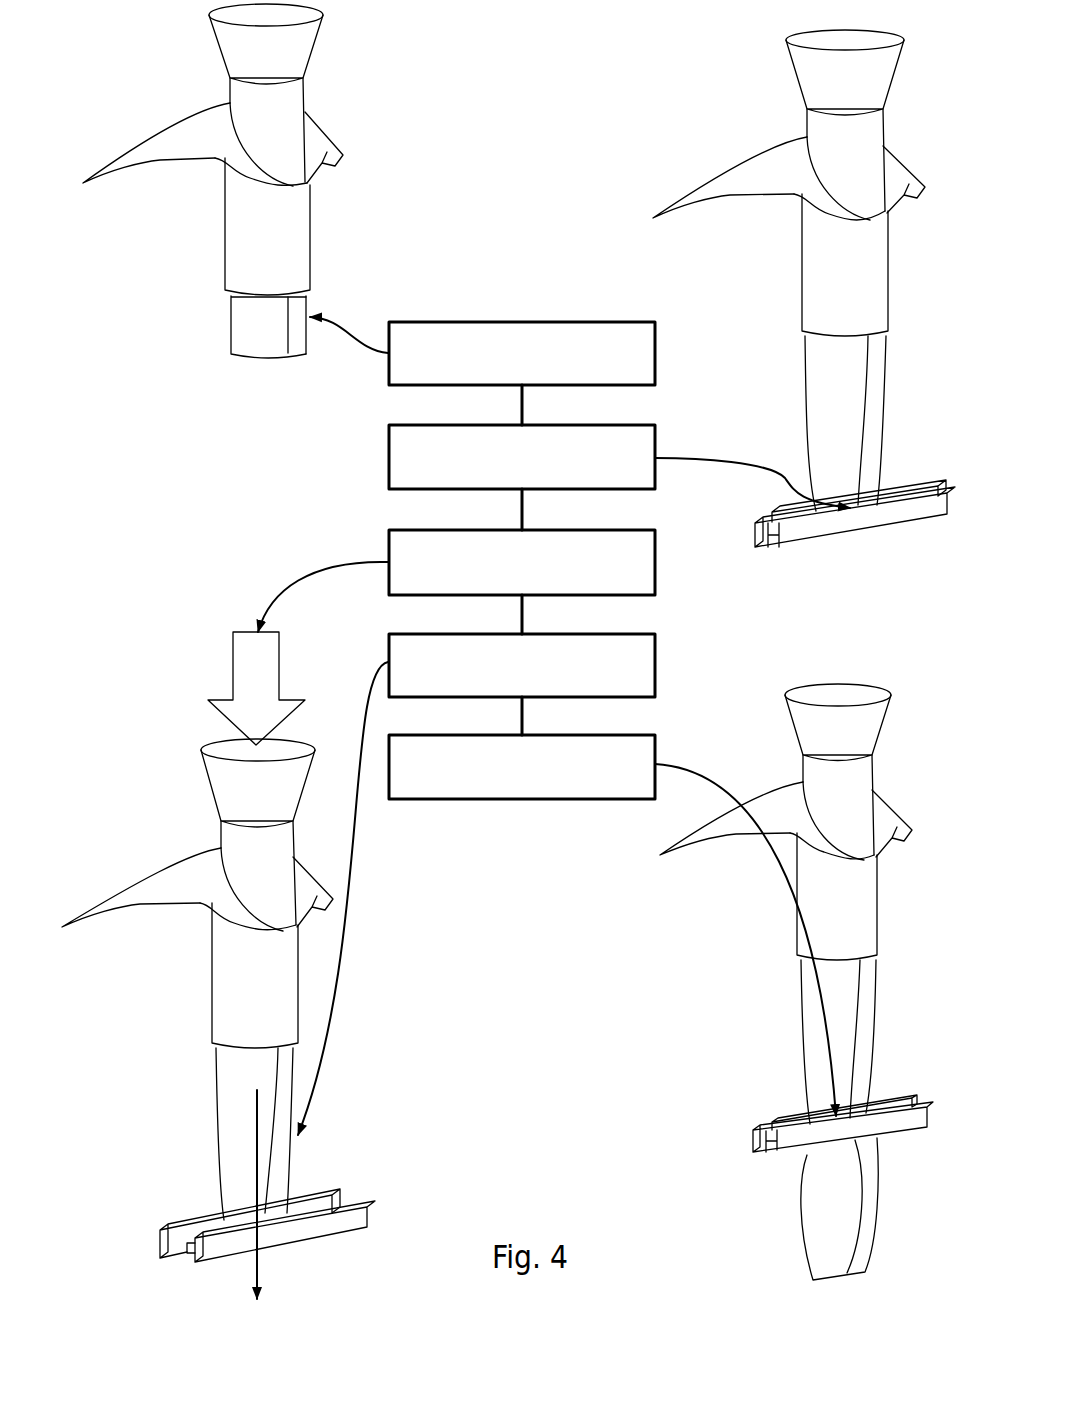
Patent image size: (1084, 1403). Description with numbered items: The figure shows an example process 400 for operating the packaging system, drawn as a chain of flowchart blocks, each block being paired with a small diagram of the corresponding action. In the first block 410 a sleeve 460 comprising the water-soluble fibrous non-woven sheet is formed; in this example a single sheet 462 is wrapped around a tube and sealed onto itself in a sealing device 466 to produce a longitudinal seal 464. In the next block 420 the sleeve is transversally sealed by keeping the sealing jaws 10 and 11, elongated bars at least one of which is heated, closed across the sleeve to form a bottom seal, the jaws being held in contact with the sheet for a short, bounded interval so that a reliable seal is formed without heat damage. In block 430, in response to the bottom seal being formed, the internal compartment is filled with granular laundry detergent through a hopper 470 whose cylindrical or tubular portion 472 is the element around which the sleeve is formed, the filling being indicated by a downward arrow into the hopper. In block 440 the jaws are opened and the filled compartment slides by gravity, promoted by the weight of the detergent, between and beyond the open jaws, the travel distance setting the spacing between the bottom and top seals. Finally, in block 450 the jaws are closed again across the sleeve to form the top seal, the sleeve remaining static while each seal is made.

The process 400 is at (558, 228).
The forming a sleeve block 410 is at (523, 320).
The bottom seal block 420 is at (388, 456).
The filling block 430 is at (655, 562).
The sliding block 440 is at (655, 662).
The top seal block 450 is at (522, 798).
The sleeve 460 is at (225, 320).
The single sheet 462 is at (151, 169).
The longitudinal seal 464 is at (296, 332).
The sealing device 466 is at (315, 237).
The hopper 470 is at (197, 750).
The cylindrical portion 472 is at (245, 854).
The sealing jaw 10 is at (842, 535).
The sealing jaw 11 is at (922, 483).